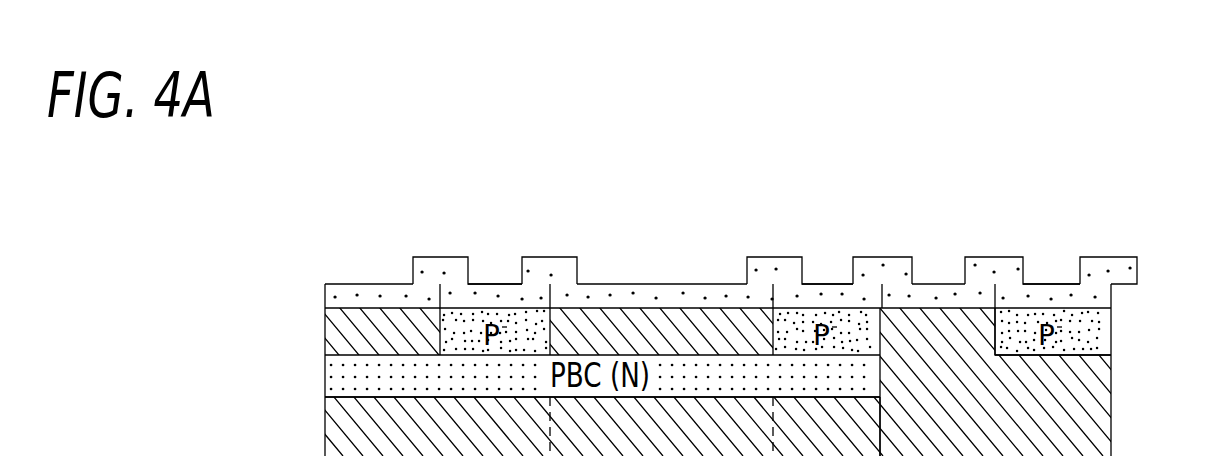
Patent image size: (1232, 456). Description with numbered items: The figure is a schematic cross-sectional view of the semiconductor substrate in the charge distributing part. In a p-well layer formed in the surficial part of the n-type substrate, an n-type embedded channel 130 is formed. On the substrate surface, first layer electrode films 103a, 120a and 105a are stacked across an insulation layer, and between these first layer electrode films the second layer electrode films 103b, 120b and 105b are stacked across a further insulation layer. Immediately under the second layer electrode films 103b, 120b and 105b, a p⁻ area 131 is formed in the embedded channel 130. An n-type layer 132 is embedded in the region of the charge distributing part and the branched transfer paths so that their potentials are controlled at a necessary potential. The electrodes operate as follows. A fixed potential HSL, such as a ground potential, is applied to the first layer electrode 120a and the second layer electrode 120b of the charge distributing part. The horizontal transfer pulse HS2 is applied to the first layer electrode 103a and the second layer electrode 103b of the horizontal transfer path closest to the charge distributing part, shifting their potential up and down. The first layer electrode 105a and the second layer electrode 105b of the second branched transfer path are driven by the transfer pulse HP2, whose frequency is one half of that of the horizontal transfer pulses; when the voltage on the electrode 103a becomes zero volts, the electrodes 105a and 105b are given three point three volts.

The first layer electrode 105a is at (347, 284).
The transfer pulse HP2 is at (385, 284).
The second layer electrode 105b is at (547, 257).
The first layer electrode 120a is at (650, 284).
The fixed potential HSL is at (828, 284).
The second layer electrode 120b is at (893, 257).
The first layer electrode 103a is at (923, 284).
The n-type layer 132 is at (870, 380).
The horizontal transfer pulse HS2 is at (938, 284).
The second layer electrode 103b is at (1115, 257).
The p⁻ area 131 is at (1100, 324).
The embedded channel 130 is at (1097, 427).